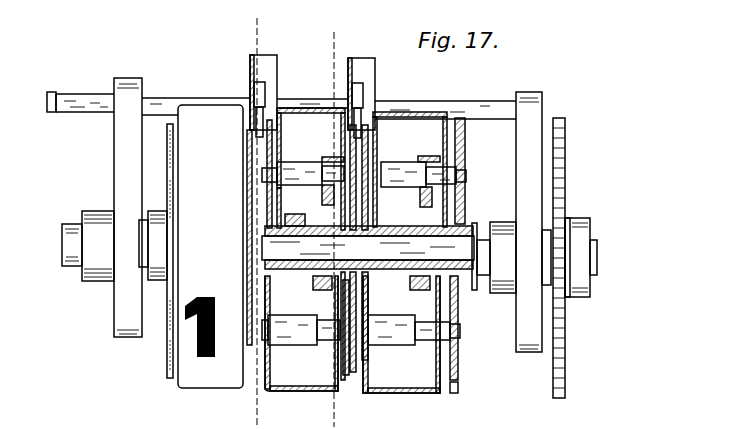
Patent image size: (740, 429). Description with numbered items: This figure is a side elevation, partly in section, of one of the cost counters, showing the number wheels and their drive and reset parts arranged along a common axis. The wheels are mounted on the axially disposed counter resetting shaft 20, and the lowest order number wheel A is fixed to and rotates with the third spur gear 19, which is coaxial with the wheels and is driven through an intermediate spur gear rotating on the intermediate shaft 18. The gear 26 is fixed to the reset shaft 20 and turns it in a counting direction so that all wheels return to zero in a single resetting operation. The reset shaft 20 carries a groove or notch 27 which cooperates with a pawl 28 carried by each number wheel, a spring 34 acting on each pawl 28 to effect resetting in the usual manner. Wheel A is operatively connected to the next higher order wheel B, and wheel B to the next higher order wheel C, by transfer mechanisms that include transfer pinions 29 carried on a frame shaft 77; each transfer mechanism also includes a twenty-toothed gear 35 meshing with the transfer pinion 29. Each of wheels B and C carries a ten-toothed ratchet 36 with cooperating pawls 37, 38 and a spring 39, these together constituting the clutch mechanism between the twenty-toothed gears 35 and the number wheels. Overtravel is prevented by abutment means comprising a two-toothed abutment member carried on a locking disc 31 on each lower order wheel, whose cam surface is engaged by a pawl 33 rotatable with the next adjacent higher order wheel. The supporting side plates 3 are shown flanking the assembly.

The shaft 77 is at (86, 95).
The side plate 3 is at (116, 174).
The spring 39 is at (244, 275).
The next higher order wheel C is at (214, 103).
The transfer pinion 29 is at (251, 60).
The next higher order wheel B is at (312, 107).
The lowest order number wheel A is at (426, 111).
The pawl 33 is at (369, 208).
The pawl 37 is at (343, 161).
The pawl 28 is at (428, 162).
The groove or notch 27 is at (414, 247).
The ten-toothed ratchet 36 is at (343, 222).
The locking disc 31 is at (252, 358).
The pawl 38 is at (340, 320).
The spring 34 is at (416, 291).
The twenty-toothed gear 35 is at (250, 349).
The third spur gear 19 is at (466, 151).
The intermediate shaft 18 is at (303, 25).
The counter resetting shaft 20 is at (598, 258).
The gear 26 is at (567, 165).